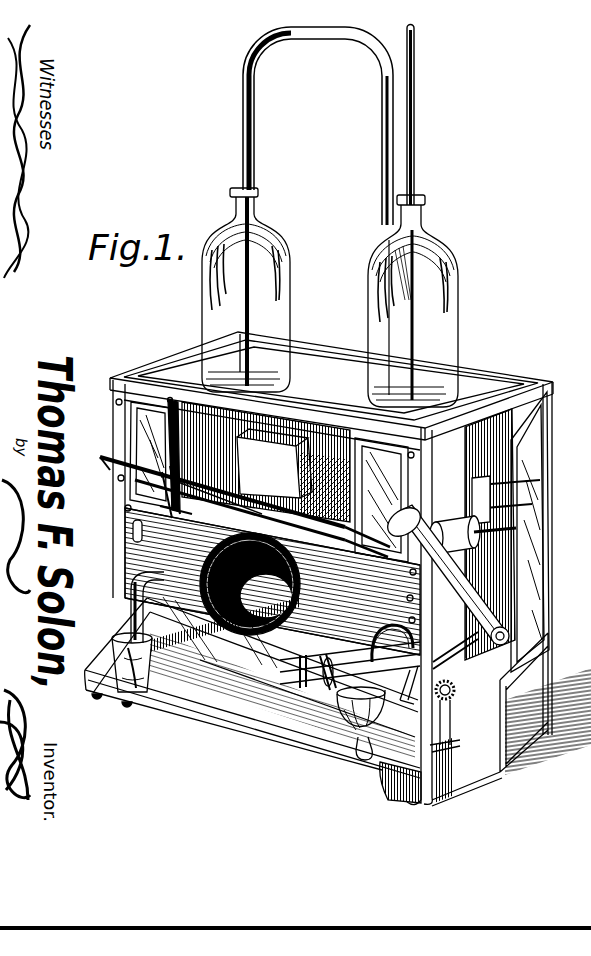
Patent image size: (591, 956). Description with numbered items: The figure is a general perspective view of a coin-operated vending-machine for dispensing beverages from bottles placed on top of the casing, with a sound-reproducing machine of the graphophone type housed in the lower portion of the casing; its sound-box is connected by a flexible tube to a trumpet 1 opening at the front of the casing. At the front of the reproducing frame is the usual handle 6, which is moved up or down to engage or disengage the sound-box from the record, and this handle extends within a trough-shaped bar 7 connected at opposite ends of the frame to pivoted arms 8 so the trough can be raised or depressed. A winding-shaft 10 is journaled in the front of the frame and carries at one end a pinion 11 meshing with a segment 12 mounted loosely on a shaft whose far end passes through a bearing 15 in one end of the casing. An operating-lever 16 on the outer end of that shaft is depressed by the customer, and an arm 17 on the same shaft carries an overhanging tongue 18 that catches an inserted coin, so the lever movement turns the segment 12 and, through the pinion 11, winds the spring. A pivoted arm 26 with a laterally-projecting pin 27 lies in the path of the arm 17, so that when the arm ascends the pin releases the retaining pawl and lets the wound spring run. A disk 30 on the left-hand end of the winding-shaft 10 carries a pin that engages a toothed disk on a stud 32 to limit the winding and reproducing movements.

The trumpet 1 is at (262, 626).
The disk 30 is at (292, 678).
The arms 8 is at (318, 680).
The trough-shaped bar 7 is at (332, 690).
The arm 17 is at (432, 626).
The laterally-projecting pin 27 is at (439, 668).
The handle 6 is at (269, 531).
The bearing 15 is at (509, 641).
The segment 12 is at (446, 722).
The winding-shaft 10 is at (446, 764).
The pinion 11 is at (438, 772).
The overhanging tongue 18 is at (462, 558).
The operating-lever 16 is at (466, 588).
The arm 26 is at (466, 653).
The stud 32 is at (466, 672).